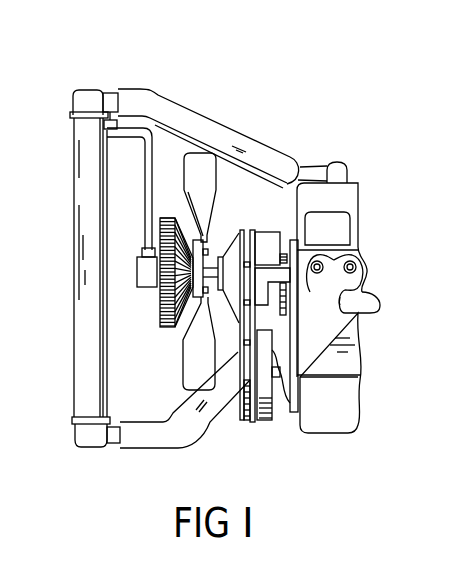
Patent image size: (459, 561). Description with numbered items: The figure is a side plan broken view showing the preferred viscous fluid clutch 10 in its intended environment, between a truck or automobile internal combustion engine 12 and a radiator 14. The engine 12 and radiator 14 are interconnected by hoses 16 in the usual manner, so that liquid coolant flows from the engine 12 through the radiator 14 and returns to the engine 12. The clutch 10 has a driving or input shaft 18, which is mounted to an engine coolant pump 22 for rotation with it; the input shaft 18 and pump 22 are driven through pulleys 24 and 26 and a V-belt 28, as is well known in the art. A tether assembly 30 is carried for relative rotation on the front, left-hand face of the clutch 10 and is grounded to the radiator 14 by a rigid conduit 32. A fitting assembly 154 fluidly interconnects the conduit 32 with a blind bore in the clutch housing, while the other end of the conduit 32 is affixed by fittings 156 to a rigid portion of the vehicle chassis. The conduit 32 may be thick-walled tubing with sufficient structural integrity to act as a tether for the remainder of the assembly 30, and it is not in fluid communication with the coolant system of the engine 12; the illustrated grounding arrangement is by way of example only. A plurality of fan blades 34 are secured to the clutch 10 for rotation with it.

The viscous fluid clutch 10 is at (155, 340).
The internal combustion engine 12 is at (355, 338).
The radiator 14 is at (90, 302).
The hoses 16 is at (163, 103).
The driving or input shaft 18 is at (212, 270).
The engine coolant pump 22 is at (283, 228).
The pulley 24 is at (270, 236).
The pulley 26 is at (240, 422).
The V-belt 28 is at (250, 423).
The tether assembly 30 is at (150, 287).
The rigid conduit 32 is at (148, 205).
The fan blades 34 is at (200, 163).
The fitting assembly 154 is at (142, 250).
The fittings 156 is at (113, 124).